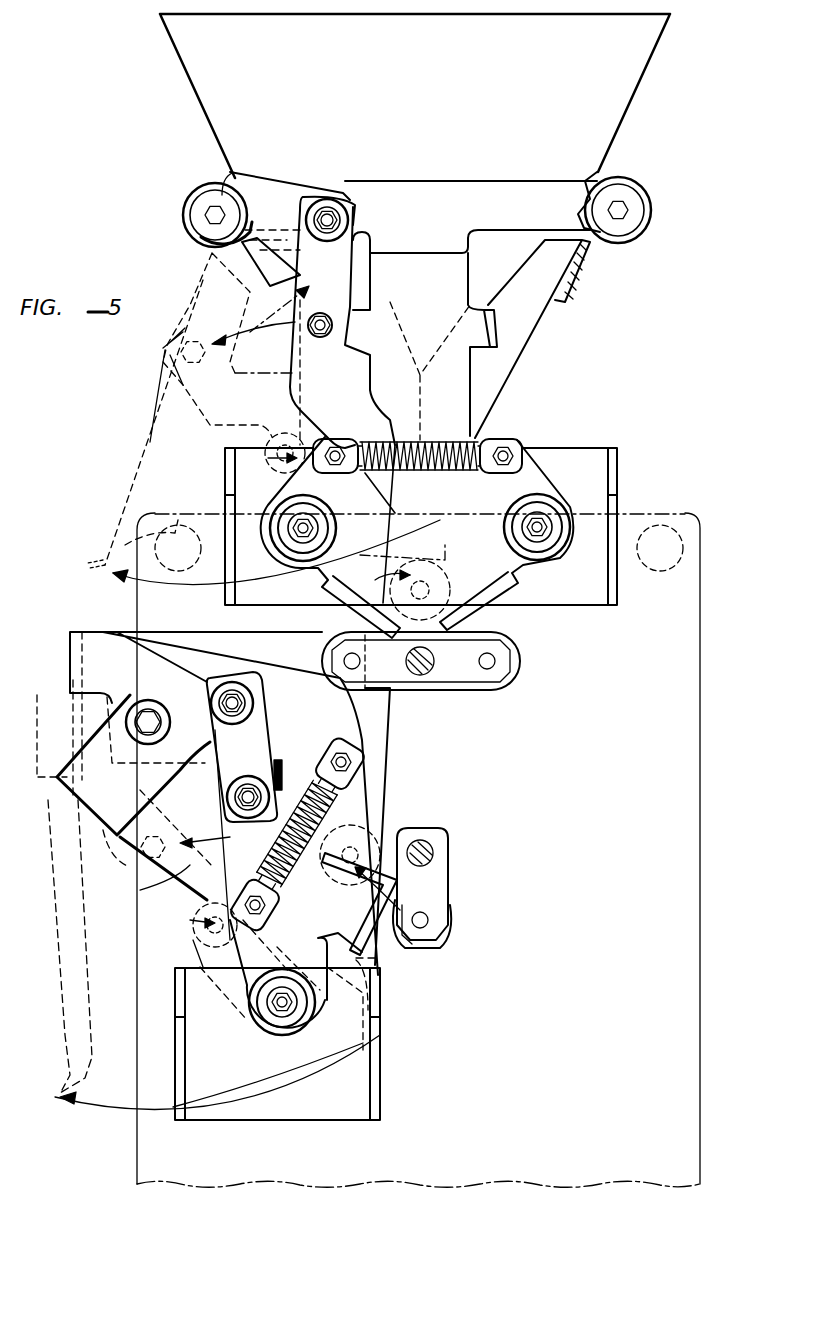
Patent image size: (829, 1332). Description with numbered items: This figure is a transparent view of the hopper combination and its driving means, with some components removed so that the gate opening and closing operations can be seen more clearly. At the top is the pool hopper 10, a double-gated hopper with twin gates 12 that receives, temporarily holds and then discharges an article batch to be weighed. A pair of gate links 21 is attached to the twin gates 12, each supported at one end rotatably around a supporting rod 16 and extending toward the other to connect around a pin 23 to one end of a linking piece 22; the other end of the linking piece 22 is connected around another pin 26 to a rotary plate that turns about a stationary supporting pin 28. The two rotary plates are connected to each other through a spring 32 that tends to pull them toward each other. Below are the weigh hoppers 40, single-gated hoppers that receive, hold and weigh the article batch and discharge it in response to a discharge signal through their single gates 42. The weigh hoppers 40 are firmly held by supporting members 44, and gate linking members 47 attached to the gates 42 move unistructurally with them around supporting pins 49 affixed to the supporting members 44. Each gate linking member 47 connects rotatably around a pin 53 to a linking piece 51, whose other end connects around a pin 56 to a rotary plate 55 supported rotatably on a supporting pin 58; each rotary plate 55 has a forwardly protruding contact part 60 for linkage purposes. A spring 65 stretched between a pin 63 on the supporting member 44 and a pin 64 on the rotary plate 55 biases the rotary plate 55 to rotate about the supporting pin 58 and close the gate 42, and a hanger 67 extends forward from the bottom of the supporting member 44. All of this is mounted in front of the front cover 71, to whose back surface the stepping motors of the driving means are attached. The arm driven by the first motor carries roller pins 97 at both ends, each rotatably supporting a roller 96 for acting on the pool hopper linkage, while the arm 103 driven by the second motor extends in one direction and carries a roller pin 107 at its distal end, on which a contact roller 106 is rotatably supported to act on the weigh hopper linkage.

The pool hopper 10 is at (633, 75).
The twin gates 12 is at (527, 315).
The supporting rods 16 is at (185, 197).
The gate links 21 is at (240, 182).
The linking piece 22 is at (342, 258).
The pin 23 is at (345, 215).
The pin 26 is at (335, 328).
The stationary supporting pin 28 is at (310, 514).
The spring 32 is at (470, 442).
The weigh hoppers 40 is at (130, 632).
The single gates 42 is at (140, 890).
The supporting members 44 is at (92, 640).
The gate linking members 47 is at (65, 798).
The supporting pins 49 is at (130, 700).
The linking piece 51 is at (255, 735).
The pin 53 is at (250, 703).
The rotary plate 55 is at (247, 997).
The pin 56 is at (226, 805).
The supporting pin 58 is at (277, 1020).
The contact part 60 is at (365, 950).
The pins 63 is at (356, 763).
The pins 64 is at (200, 912).
The spring 65 is at (325, 837).
The hanger 67 is at (380, 1050).
The front cover 71 is at (705, 688).
The roller 96 is at (520, 668).
The roller pins 97 is at (495, 656).
The arm 103 is at (435, 880).
The contact roller 106 is at (448, 947).
The roller pin 107 is at (430, 922).